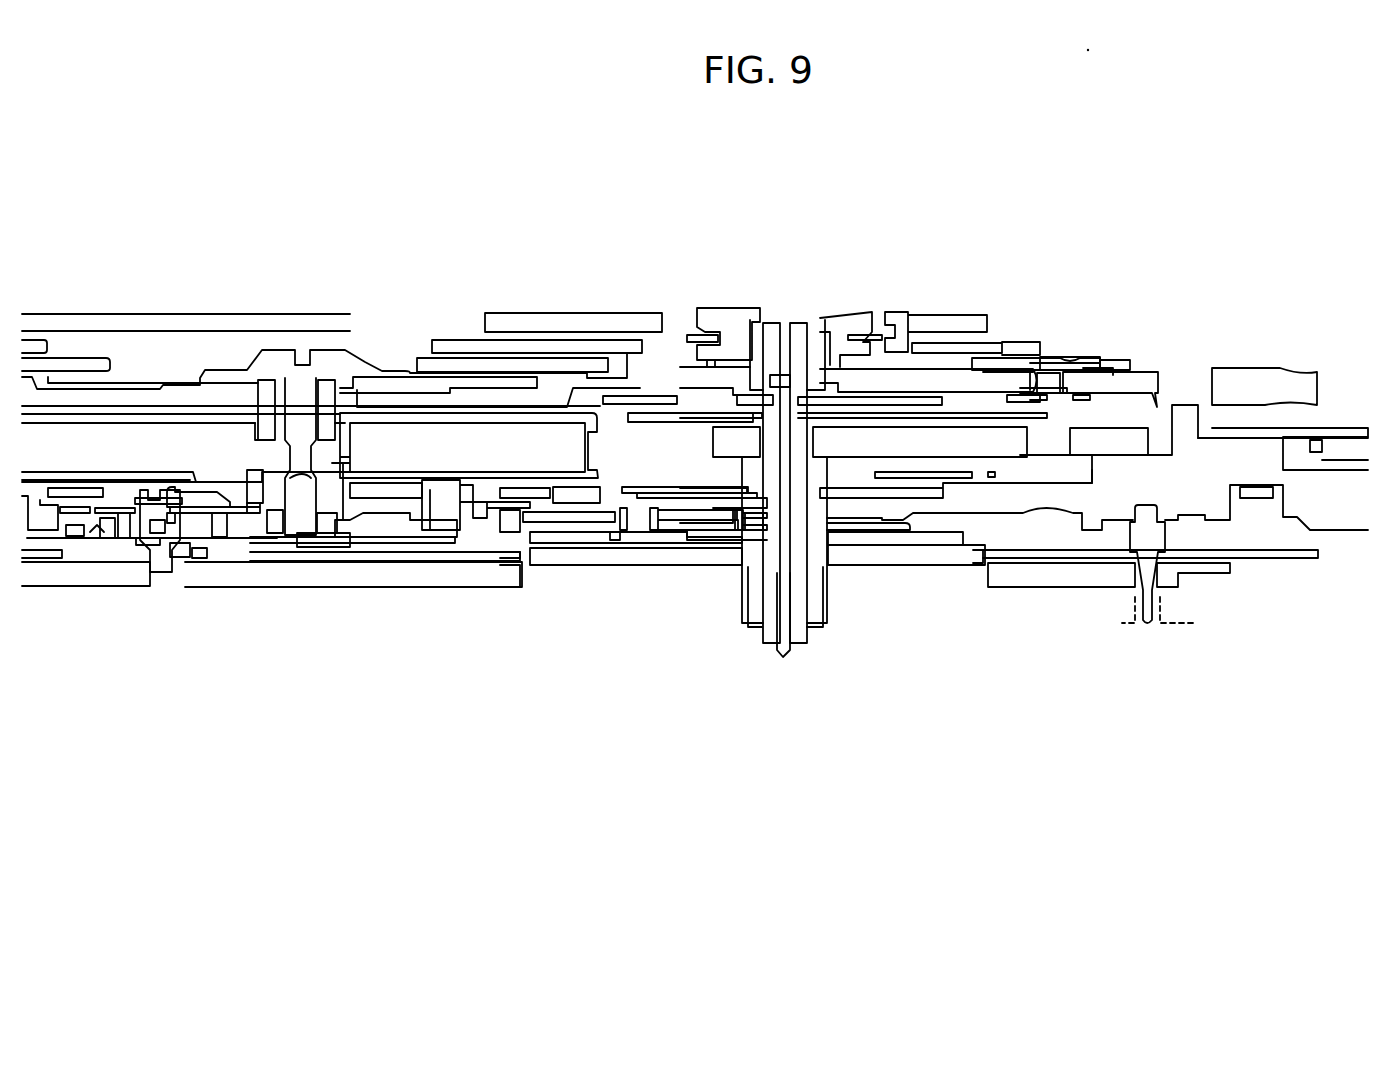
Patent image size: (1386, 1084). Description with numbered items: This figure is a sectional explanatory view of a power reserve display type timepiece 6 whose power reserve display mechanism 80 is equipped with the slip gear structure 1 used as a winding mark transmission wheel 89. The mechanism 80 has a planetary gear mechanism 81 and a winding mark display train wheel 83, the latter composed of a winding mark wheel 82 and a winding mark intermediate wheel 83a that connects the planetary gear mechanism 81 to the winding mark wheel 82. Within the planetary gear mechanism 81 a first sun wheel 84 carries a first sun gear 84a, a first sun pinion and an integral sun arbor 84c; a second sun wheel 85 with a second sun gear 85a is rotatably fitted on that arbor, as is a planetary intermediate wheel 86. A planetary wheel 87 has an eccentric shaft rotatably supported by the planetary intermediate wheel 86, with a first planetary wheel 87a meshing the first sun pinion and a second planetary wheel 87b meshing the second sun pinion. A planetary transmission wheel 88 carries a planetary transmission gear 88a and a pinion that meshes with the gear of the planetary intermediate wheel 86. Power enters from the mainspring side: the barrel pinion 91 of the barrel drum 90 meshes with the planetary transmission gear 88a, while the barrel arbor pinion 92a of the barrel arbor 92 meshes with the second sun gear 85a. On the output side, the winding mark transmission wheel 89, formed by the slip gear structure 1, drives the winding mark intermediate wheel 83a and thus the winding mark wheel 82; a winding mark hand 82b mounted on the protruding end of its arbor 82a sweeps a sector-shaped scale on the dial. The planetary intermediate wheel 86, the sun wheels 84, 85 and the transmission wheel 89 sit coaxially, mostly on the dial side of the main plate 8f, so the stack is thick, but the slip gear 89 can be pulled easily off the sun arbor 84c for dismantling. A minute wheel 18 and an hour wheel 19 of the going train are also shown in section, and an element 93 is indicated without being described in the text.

The slip gear structure 1 is at (130, 550).
The timepiece 6 is at (1126, 190).
The main plate 8f is at (1186, 460).
The minute wheel 18 is at (613, 530).
The hour wheel 19 is at (752, 562).
The power reserve display mechanism 80 is at (516, 709).
The planetary gear mechanism 81 is at (315, 203).
The winding mark wheel 82 is at (1148, 590).
The arbor 82a is at (1143, 608).
The winding mark hand 82b is at (1188, 622).
The winding mark display train wheel 83 is at (1022, 685).
The winding mark intermediate wheel 83a is at (940, 553).
The first sun wheel 84 is at (128, 548).
The first sun gear 84a is at (133, 520).
The sun arbor 84c is at (158, 550).
The second sun wheel 85 is at (68, 548).
The second sun gear 85a is at (97, 548).
The planetary intermediate wheel 86 is at (170, 560).
The planetary wheel 87 is at (68, 540).
The first planetary wheel 87a is at (72, 520).
The second planetary wheel 87b is at (112, 545).
The planetary transmission wheel 88 is at (425, 506).
The planetary transmission gear 88a is at (372, 493).
The winding mark transmission wheel 89 is at (205, 556).
The barrel drum 90 is at (536, 436).
The barrel pinion 91 is at (340, 512).
The barrel arbor 92 is at (300, 457).
The barrel arbor pinion 92a is at (300, 550).
The supply roller 93 is at (457, 442).